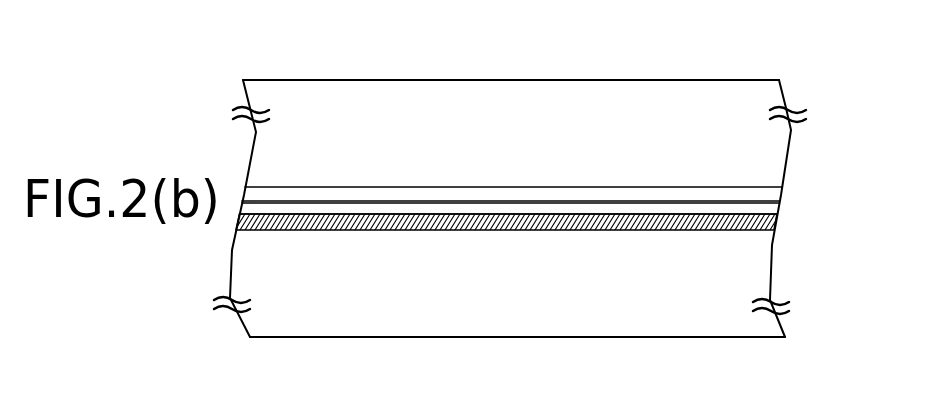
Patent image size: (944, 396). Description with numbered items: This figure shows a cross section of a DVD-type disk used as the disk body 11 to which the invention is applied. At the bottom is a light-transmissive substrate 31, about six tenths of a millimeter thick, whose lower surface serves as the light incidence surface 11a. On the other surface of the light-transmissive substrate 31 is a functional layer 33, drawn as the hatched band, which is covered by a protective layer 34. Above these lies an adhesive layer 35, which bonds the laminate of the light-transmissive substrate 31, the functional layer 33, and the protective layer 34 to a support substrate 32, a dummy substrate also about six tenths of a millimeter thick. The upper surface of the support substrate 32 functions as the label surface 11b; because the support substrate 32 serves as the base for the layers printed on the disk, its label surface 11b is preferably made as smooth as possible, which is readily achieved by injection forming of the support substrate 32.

The disk body 11 is at (318, 48).
The light incidence surface 11a is at (472, 337).
The label surface 11b is at (660, 80).
The light-transmissive substrate 31 is at (752, 278).
The support substrate 32 is at (772, 148).
The functional layer 33 is at (772, 222).
The protective layer 34 is at (765, 208).
The adhesive layer 35 is at (765, 196).